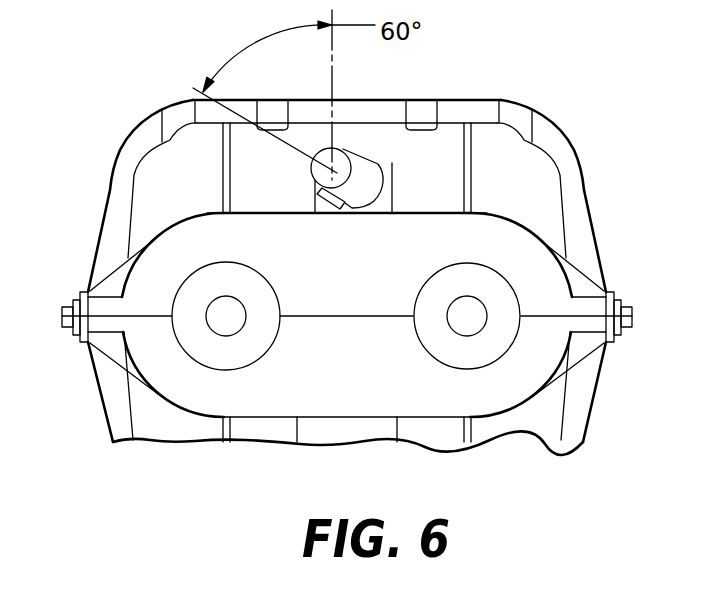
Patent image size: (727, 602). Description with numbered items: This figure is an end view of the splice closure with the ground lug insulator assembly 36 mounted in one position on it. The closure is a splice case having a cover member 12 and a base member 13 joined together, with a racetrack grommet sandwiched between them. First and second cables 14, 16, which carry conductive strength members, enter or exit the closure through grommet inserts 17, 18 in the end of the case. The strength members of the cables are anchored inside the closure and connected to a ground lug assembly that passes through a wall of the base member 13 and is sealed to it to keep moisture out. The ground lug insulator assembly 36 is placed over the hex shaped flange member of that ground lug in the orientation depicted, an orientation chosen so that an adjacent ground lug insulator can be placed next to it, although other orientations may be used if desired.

The cover member 12 is at (594, 406).
The base member 13 is at (575, 212).
The first cable 14 is at (190, 333).
The second cable 16 is at (472, 337).
The grommet insert 17 is at (241, 348).
The grommet insert 18 is at (438, 345).
The ground lug insulator assembly 36 is at (360, 172).